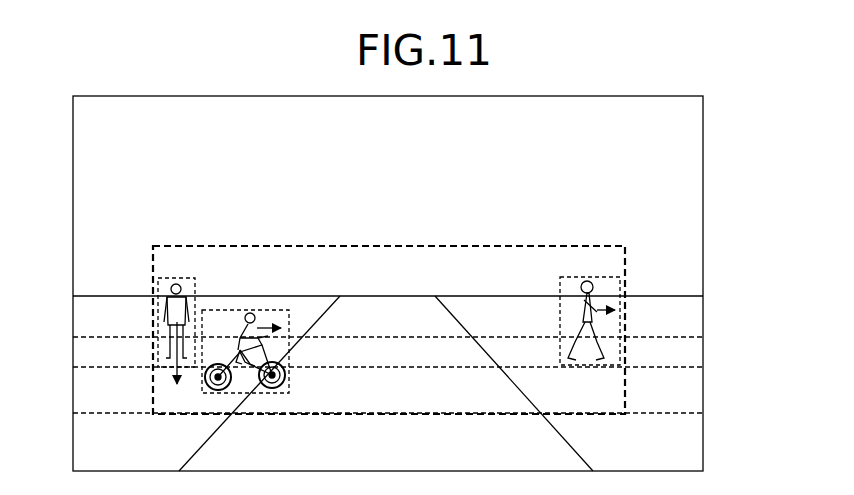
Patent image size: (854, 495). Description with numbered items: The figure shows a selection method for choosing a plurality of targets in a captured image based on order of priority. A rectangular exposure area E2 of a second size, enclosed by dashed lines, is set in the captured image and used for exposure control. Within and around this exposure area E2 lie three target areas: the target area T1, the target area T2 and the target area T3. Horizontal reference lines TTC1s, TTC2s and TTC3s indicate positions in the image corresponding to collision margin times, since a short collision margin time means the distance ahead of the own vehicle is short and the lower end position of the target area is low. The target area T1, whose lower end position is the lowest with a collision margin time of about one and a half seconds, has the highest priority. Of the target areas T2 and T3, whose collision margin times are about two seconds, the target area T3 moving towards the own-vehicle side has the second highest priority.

The target area T1 is at (202, 391).
The target area T2 is at (618, 270).
The target area T3 is at (160, 278).
The exposure area E2 is at (593, 241).
The time-to-collision 1 second line TTC1s is at (706, 413).
The time-to-collision 2 second line TTC2s is at (706, 367).
The time-to-collision 3 second line TTC3s is at (706, 337).